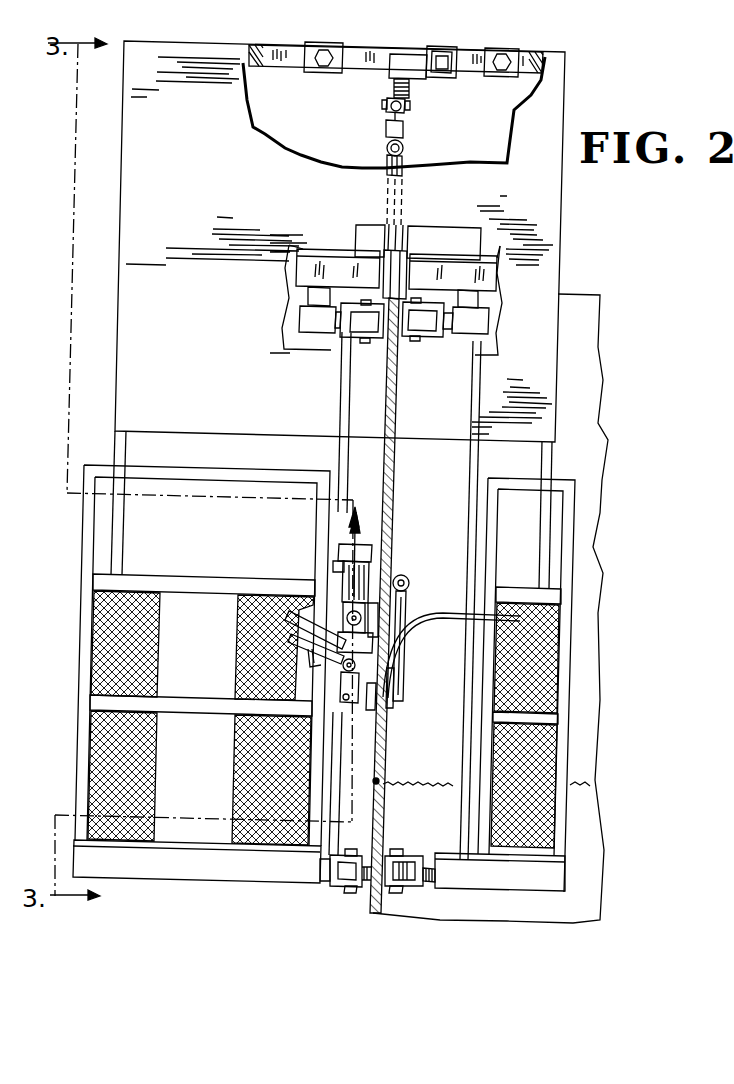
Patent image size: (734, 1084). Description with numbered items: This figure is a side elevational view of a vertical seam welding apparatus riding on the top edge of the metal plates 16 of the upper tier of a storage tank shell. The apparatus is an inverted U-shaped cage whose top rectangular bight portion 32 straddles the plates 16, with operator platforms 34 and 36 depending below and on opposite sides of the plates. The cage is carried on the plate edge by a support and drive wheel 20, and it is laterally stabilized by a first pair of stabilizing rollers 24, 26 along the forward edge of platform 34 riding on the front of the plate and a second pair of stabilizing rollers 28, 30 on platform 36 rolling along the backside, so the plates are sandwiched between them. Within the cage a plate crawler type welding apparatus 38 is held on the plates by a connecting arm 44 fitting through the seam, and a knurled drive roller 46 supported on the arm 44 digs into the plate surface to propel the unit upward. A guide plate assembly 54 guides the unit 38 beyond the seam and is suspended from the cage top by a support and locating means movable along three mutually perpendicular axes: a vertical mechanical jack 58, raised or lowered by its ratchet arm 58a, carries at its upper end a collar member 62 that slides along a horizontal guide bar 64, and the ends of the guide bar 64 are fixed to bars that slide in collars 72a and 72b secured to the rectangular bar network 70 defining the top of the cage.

The metal plates 16 is at (393, 455).
The support and drive wheel 20 is at (418, 248).
The stabilizing roller 24 is at (353, 334).
The stabilizing roller 26 is at (333, 885).
The stabilizing roller 28 is at (427, 333).
The stabilizing roller 30 is at (412, 858).
The bight portion 32 is at (552, 211).
The operator platform 34 is at (90, 536).
The operator platform 36 is at (566, 546).
The plate crawler type welding apparatus 38 is at (312, 613).
The connecting arm 44 is at (403, 593).
The knurled drive roller 46 is at (400, 574).
The guide plate assembly 54 is at (425, 154).
The mechanical jack 58 is at (352, 69).
The ratchet arm 58a is at (392, 84).
The collar member 62 is at (513, 78).
The guide bar 64 is at (451, 78).
The rectangular bar network 70 is at (268, 135).
The collar 72a is at (312, 74).
The collar 72b is at (517, 71).